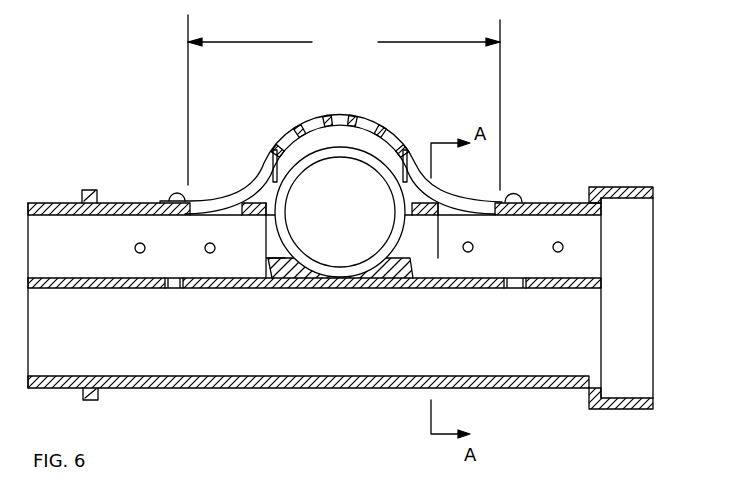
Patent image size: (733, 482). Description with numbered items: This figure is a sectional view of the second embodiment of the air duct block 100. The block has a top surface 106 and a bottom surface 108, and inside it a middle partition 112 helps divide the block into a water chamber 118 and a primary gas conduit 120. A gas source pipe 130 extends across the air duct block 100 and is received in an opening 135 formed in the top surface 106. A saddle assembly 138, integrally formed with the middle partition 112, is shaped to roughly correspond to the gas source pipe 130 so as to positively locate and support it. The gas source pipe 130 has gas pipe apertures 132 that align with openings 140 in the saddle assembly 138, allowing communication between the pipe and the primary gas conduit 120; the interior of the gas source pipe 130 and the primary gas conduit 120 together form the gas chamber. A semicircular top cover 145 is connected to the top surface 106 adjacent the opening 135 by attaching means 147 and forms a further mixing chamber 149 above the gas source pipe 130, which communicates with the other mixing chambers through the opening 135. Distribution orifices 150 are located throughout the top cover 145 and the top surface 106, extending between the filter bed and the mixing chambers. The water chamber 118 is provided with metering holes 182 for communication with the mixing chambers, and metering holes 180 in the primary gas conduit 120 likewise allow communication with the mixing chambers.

The air duct block 100 is at (579, 97).
The top surface 106 is at (556, 207).
The bottom surface 108 is at (333, 391).
The middle partition 112 is at (539, 288).
The water chamber 118 is at (364, 348).
The primary gas conduit 120 is at (534, 261).
The gas source pipe 130 is at (367, 155).
The gas pipe apertures 132 is at (292, 241).
The opening 135 is at (344, 102).
The saddle assembly 138 is at (270, 267).
The openings 140 is at (265, 240).
The semicircular top cover 145 is at (444, 197).
The attaching means 147 is at (177, 187).
The mixing chamber 149 is at (340, 137).
The distribution orifices 150 is at (125, 203).
The metering holes 180 is at (133, 248).
The metering holes 182 is at (172, 284).